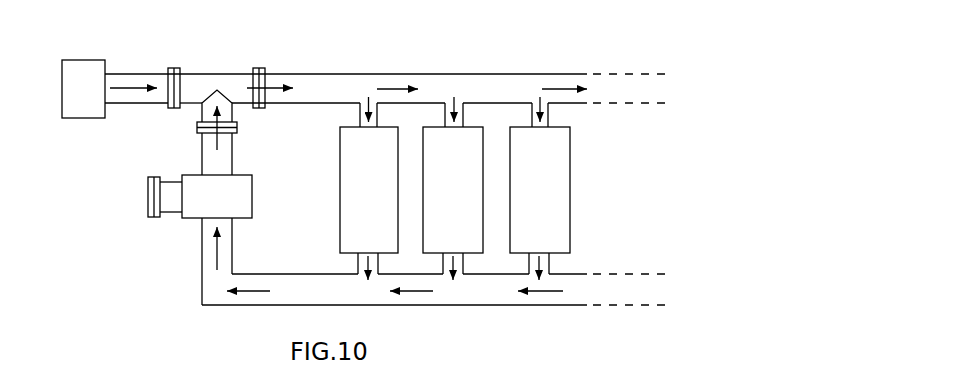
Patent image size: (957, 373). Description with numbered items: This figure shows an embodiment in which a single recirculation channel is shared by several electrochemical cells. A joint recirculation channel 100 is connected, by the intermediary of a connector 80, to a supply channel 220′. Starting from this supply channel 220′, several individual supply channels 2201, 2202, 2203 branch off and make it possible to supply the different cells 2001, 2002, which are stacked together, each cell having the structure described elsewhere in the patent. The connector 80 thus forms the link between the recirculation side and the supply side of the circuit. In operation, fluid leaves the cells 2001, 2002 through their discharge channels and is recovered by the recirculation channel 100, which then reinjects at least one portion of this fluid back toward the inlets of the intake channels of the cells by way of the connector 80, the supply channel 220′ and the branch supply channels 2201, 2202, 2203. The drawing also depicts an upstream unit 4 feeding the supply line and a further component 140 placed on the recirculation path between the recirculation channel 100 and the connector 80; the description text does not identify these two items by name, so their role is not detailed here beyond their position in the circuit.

The source / supply unit 4 is at (83, 89).
The connector 80 is at (228, 80).
The supply channel 220′ is at (316, 74).
The supply channel 2201 is at (360, 108).
The supply channel 2202 is at (445, 110).
The supply channel 2203 is at (548, 112).
The cell 2001 is at (340, 170).
The cell 2002 is at (570, 172).
The pump 140 is at (200, 196).
The joint recirculation channel 100 is at (201, 289).